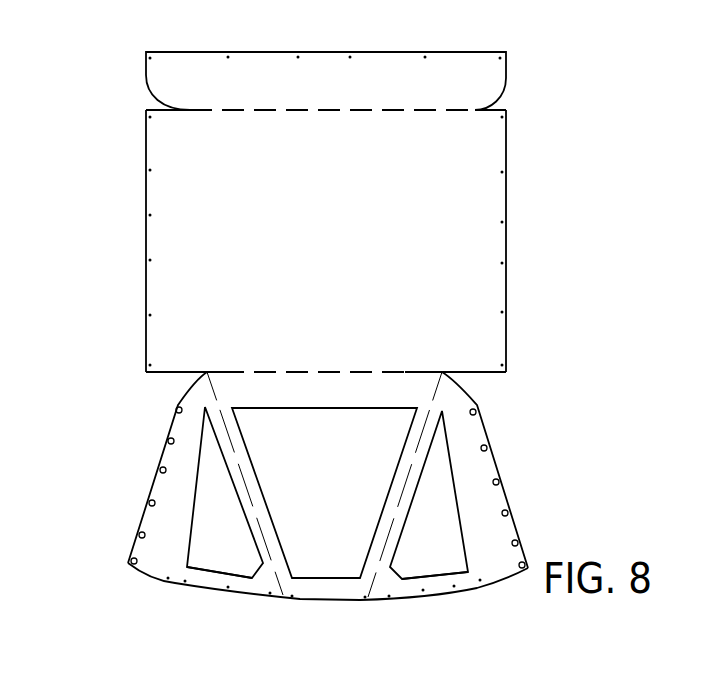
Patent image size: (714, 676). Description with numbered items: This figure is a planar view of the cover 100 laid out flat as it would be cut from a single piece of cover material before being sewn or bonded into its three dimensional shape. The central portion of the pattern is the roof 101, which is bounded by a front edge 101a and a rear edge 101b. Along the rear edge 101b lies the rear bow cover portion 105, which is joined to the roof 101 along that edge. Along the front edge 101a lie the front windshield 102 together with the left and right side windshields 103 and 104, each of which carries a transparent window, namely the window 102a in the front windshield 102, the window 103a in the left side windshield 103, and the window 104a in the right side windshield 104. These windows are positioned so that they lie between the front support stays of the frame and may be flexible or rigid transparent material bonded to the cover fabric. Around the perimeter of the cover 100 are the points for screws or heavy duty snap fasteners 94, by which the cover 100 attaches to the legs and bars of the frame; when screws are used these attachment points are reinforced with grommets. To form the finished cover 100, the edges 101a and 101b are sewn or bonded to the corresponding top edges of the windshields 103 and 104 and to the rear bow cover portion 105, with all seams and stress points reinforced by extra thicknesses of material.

The snap fasteners 94 is at (350, 57).
The cover 100 is at (126, 133).
The roof 101 is at (478, 215).
The front edge 101a is at (147, 373).
The rear edge 101b is at (153, 107).
The front windshield 102 is at (443, 412).
The transparent window 102a is at (327, 556).
The left side windshield 103 is at (505, 514).
The transparent window 103a is at (435, 560).
The right side windshield 104 is at (158, 543).
The transparent window 104a is at (225, 560).
The rear bow cover portion 105 is at (436, 76).